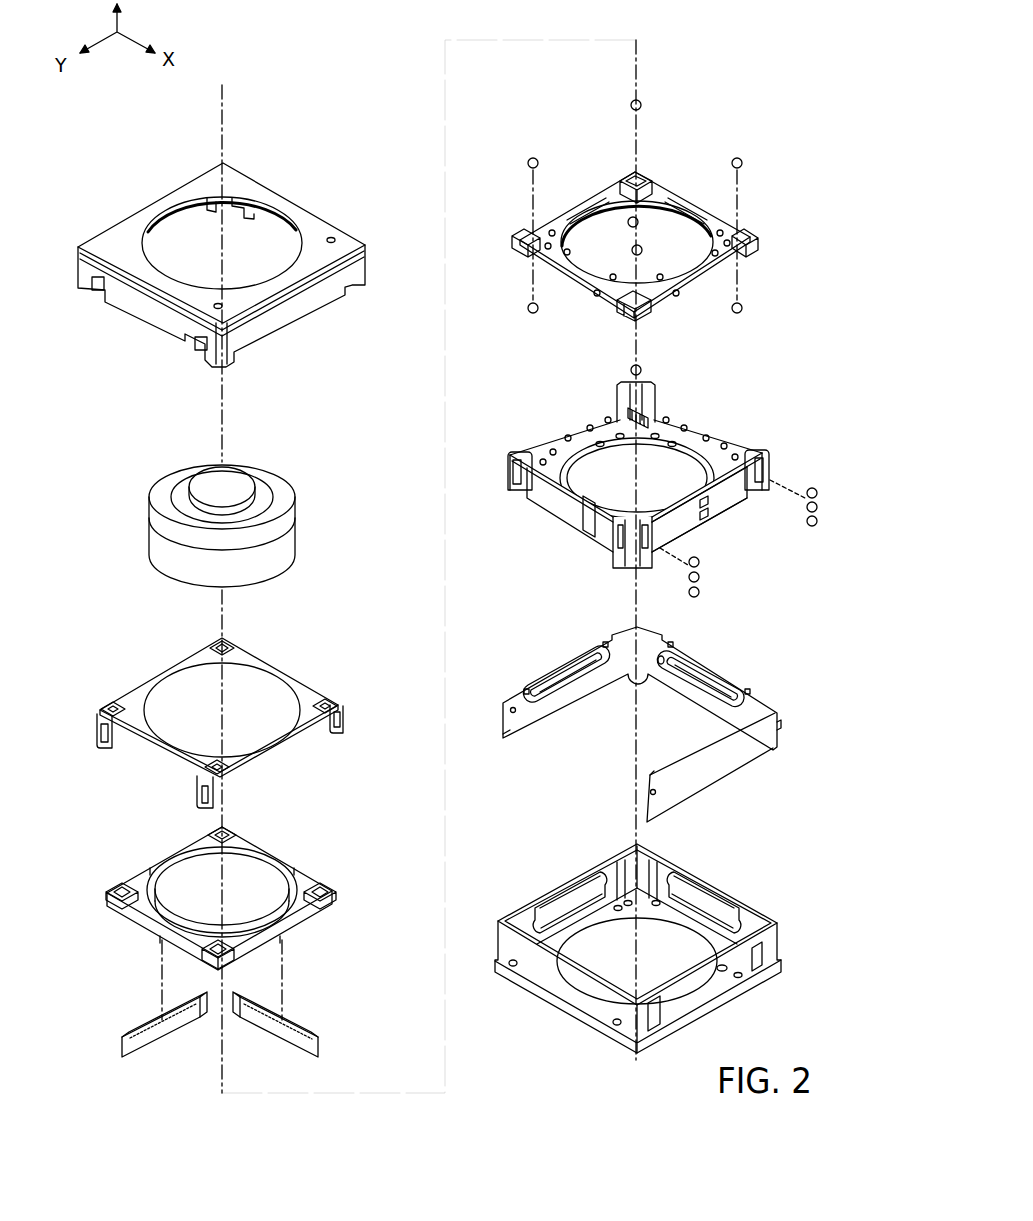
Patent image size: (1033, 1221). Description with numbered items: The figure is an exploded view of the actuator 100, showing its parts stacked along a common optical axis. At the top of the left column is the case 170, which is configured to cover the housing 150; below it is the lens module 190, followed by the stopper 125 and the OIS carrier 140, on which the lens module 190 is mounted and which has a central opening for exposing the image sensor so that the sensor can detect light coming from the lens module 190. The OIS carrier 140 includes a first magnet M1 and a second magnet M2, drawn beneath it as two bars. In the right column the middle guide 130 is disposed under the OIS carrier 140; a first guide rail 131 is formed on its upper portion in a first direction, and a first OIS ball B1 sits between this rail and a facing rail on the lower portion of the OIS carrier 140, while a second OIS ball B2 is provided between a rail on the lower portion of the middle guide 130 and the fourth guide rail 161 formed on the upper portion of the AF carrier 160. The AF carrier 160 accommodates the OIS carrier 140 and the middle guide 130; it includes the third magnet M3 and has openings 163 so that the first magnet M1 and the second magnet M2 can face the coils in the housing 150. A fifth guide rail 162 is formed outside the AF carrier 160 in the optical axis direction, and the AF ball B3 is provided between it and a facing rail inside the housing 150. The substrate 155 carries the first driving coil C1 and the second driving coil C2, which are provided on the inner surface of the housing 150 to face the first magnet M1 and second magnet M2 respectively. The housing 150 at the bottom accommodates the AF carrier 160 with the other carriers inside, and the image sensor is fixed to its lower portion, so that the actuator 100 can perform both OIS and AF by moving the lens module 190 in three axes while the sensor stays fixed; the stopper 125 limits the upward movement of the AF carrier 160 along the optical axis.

The actuator 100 is at (297, 34).
The case 170 is at (283, 197).
The lens module 190 is at (266, 472).
The stopper 125 is at (273, 683).
The OIS carrier 140 is at (284, 869).
The first magnet M1 is at (300, 1026).
The second magnet M2 is at (136, 1026).
The first OIS ball B1 is at (642, 104).
The first guide rail 131 is at (642, 172).
The middle guide 130 is at (675, 214).
The second OIS ball B2 is at (743, 308).
The opening 163 is at (563, 426).
The fourth guide rail 161 is at (628, 416).
The AF carrier 160 is at (640, 497).
The AF ball B3 is at (815, 488).
The third magnet M3 is at (728, 505).
The fifth guide rail 162 is at (637, 572).
The first driving coil C1 is at (700, 652).
The substrate 155 is at (662, 713).
The second driving coil C2 is at (560, 700).
The housing 150 is at (742, 905).